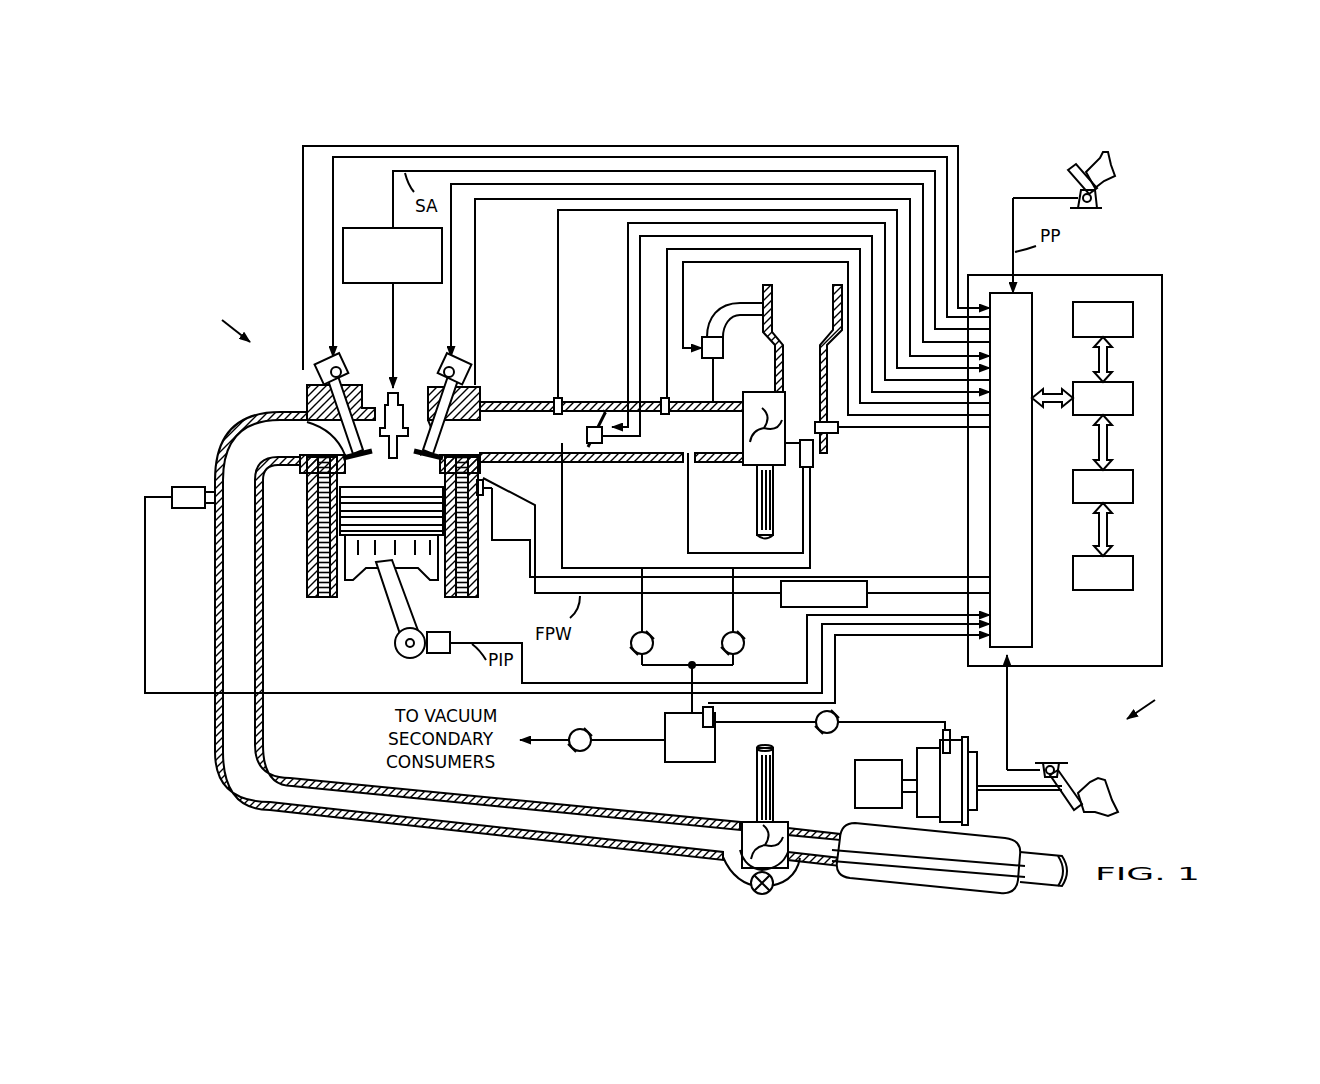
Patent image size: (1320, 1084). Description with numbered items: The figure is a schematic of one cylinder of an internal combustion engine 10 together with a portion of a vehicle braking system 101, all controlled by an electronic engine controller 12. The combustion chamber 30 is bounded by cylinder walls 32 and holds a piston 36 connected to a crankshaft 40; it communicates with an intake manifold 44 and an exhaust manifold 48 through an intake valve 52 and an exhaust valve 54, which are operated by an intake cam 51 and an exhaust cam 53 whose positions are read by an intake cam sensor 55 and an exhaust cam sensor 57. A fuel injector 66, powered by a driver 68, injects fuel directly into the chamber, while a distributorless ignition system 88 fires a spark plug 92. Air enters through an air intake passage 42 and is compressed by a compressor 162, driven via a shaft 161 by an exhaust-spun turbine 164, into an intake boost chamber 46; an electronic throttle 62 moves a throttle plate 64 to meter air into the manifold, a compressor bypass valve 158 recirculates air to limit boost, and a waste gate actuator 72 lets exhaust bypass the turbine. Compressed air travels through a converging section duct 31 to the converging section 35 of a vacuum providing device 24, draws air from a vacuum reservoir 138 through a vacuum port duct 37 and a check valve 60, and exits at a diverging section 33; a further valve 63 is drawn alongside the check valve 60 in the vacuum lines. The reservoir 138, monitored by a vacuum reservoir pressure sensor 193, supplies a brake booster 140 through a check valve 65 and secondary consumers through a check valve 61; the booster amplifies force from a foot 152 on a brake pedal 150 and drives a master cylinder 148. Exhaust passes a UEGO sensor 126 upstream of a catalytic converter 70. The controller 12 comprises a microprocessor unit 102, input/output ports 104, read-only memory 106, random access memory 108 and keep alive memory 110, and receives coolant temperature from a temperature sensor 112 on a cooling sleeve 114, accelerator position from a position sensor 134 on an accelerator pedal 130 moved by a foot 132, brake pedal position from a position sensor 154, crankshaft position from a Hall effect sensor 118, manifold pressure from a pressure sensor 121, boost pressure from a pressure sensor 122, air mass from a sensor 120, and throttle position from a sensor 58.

The internal combustion engine 10 is at (221, 324).
The electronic engine controller 12 is at (1163, 280).
The vacuum providing device 24 is at (818, 462).
The combustion chamber 30 is at (388, 474).
The converging section duct 31 is at (704, 553).
The cylinder walls 32 is at (338, 597).
The diverging section 33 is at (795, 440).
The converging section 35 is at (801, 468).
The piston 36 is at (382, 566).
The vacuum port duct 37 is at (812, 556).
The crankshaft 40 is at (398, 657).
The air intake passage 42 is at (812, 324).
The intake manifold 44 is at (532, 444).
The intake boost chamber 46 is at (689, 444).
The exhaust manifold 48 is at (290, 446).
The intake cam 51 is at (447, 360).
The intake valve 52 is at (432, 438).
The exhaust cam 53 is at (340, 360).
The exhaust valve 54 is at (306, 412).
The intake cam sensor 55 is at (463, 362).
The exhaust cam sensor 57 is at (320, 365).
The throttle position sensor 58 is at (603, 444).
The check valve 60 is at (742, 654).
The check valve 61 is at (584, 750).
The electronic throttle 62 is at (592, 412).
The check valve 63 is at (650, 654).
The throttle plate 64 is at (600, 410).
The check valve 65 is at (822, 733).
The fuel injector 66 is at (497, 490).
The driver 68 is at (870, 600).
The catalytic converter 70 is at (842, 878).
The waste gate actuator 72 is at (750, 892).
The distributorless ignition system 88 is at (349, 228).
The spark plug 92 is at (398, 394).
The vehicle braking system 101 is at (1158, 707).
The microprocessor unit 102 is at (1133, 400).
The input/output ports 104 is at (1034, 300).
The read-only memory 106 is at (1133, 314).
The random access memory 108 is at (1133, 486).
The keep alive memory 110 is at (1133, 572).
The temperature sensor 112 is at (485, 498).
The cooling sleeve 114 is at (473, 578).
The Hall effect sensor 118 is at (442, 654).
The air mass sensor 120 is at (836, 434).
The pressure sensor 121 is at (556, 398).
The pressure sensor 122 is at (669, 400).
The UEGO sensor 126 is at (172, 490).
The accelerator pedal 130 is at (1067, 173).
The foot 132 is at (1110, 160).
The position sensor 134 is at (1103, 204).
The vacuum reservoir 138 is at (665, 724).
The brake booster 140 is at (952, 735).
The master cylinder 148 is at (855, 768).
The brake pedal 150 is at (1075, 810).
The foot 152 is at (1120, 790).
The position sensor 154 is at (1046, 762).
The compressor bypass valve 158 is at (724, 350).
The shaft 161 is at (757, 482).
The compressor 162 is at (762, 392).
The turbine 164 is at (746, 822).
The vacuum reservoir pressure sensor 193 is at (728, 714).